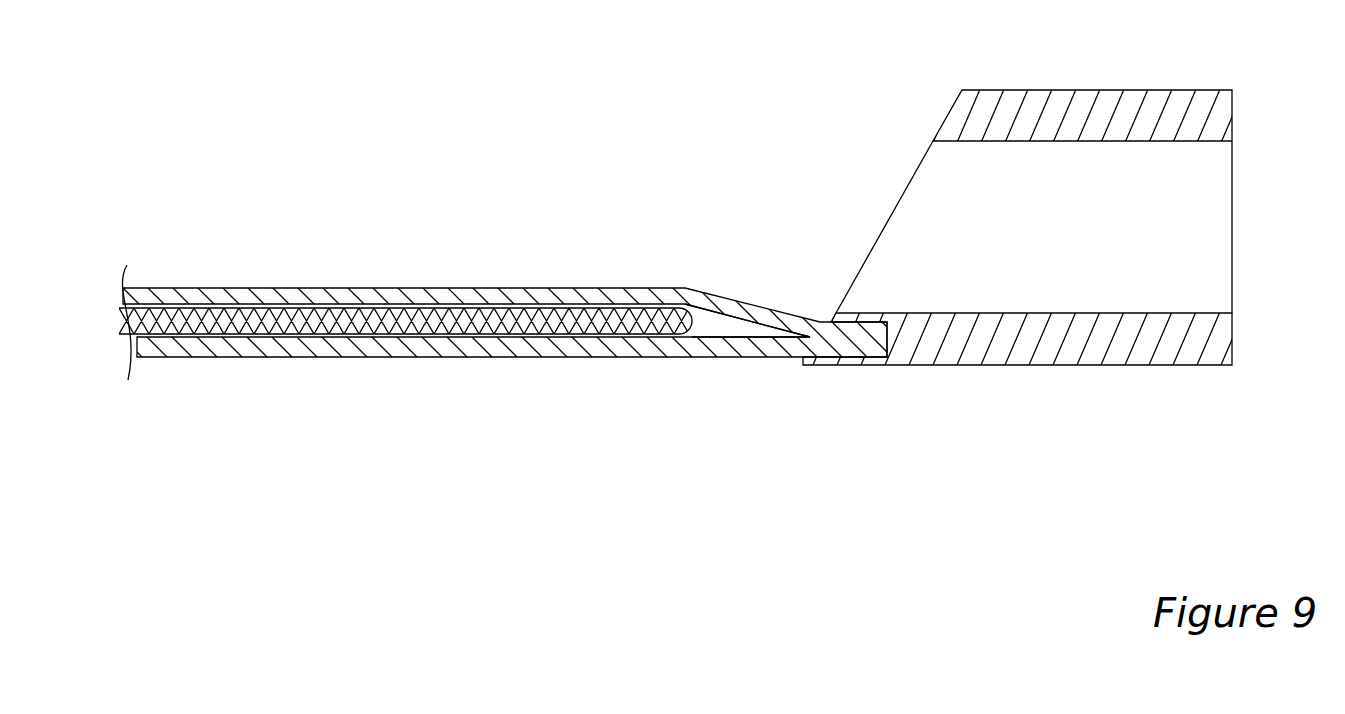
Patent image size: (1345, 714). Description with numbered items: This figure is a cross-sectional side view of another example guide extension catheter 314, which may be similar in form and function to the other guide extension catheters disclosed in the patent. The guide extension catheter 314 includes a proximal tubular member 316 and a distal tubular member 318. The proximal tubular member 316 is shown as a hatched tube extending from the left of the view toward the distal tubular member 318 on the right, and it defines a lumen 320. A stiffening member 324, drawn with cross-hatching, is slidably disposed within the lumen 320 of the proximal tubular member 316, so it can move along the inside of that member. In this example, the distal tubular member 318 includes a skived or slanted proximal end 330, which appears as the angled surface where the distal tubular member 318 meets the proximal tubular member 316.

The guide extension catheter 314 is at (487, 128).
The proximal tubular member 316 is at (397, 298).
The distal tubular member 318 is at (1107, 90).
The lumen 320 is at (713, 328).
The stiffening member 324 is at (293, 324).
The skived or slanted proximal end 330 is at (950, 110).